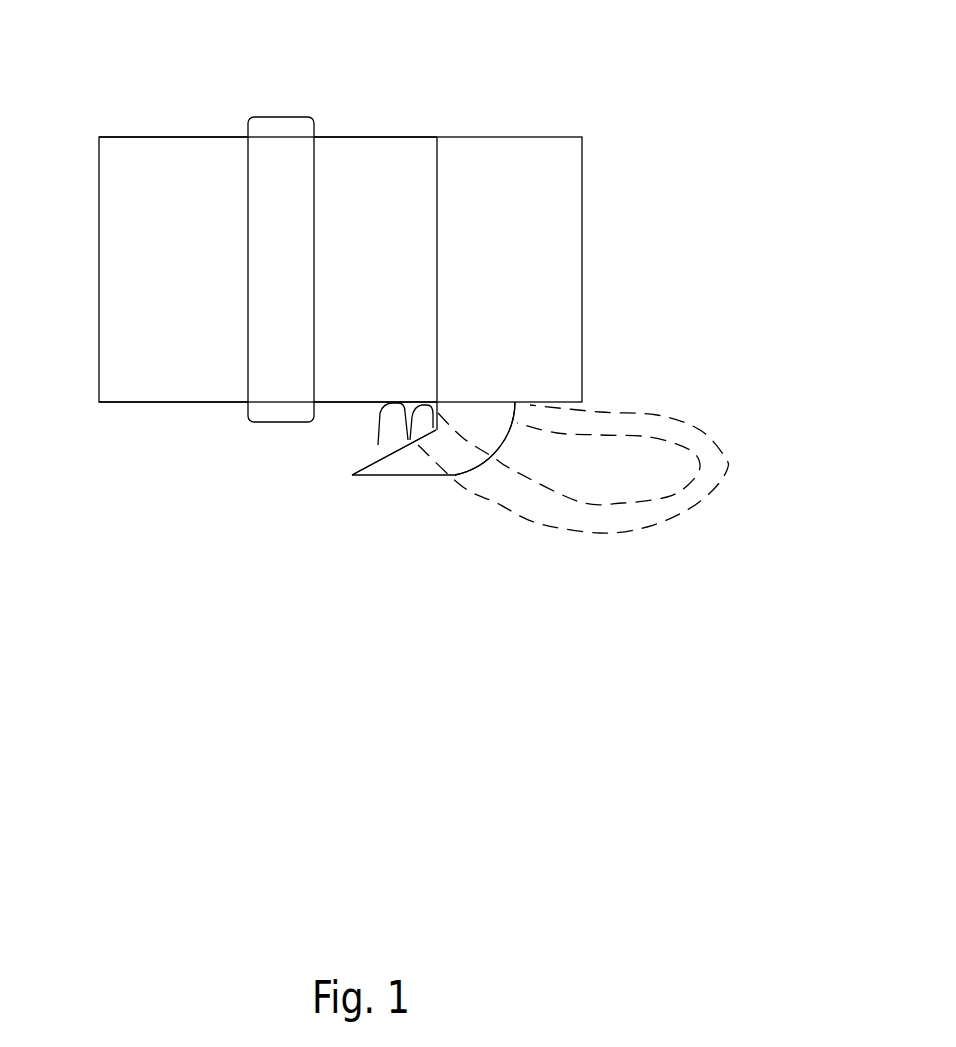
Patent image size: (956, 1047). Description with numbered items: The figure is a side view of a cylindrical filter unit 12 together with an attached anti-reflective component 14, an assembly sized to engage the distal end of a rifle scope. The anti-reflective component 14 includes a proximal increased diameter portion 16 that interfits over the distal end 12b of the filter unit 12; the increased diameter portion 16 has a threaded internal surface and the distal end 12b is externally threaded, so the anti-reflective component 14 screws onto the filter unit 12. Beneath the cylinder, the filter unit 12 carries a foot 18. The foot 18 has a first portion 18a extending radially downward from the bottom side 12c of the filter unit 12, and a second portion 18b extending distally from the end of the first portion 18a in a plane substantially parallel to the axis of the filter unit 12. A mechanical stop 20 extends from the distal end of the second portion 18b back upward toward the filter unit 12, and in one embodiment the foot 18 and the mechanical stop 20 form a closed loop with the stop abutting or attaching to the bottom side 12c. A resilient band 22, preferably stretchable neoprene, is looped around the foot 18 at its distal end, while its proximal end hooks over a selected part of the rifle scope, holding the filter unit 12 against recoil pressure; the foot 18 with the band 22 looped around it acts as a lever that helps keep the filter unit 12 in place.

The filter unit 12 is at (506, 80).
The anti-reflective component 14 is at (118, 137).
The proximal increased diameter portion 16 is at (267, 117).
The distal end 12b is at (331, 114).
The bottom side 12c is at (334, 420).
The foot 18 is at (423, 476).
The first portion 18a is at (535, 457).
The second portion 18b is at (363, 492).
The mechanical stop 20 is at (380, 432).
The resilient band 22 is at (724, 450).